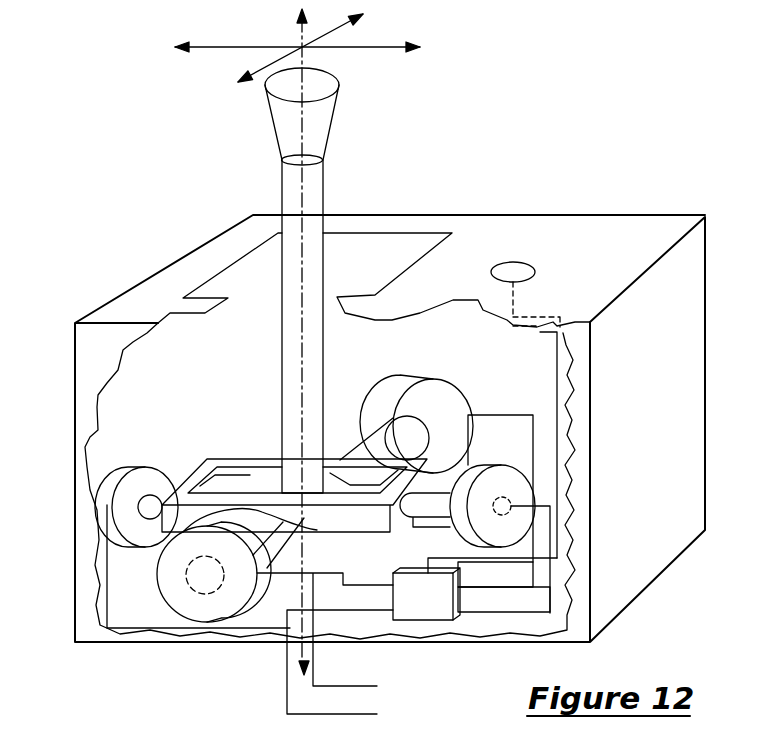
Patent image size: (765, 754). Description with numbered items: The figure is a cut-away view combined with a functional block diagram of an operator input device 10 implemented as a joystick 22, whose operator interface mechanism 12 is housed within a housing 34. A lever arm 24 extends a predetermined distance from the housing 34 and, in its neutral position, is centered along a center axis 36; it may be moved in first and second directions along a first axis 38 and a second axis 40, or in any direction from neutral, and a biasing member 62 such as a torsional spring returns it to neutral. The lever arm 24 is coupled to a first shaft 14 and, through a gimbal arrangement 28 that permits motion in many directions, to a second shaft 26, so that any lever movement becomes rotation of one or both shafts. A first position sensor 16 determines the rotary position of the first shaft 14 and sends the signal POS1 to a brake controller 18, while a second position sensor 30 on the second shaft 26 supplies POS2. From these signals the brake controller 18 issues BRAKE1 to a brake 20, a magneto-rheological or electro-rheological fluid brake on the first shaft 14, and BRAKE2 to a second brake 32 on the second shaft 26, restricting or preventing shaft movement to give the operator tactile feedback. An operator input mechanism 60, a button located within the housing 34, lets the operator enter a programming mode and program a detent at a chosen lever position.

The operator input device 10 is at (539, 205).
The operator interface mechanism 12 is at (108, 445).
The first shaft 14 is at (318, 531).
The first position sensor 16 is at (157, 593).
The brake controller 18 is at (436, 608).
The brake 20 is at (415, 374).
The joystick 22 is at (621, 214).
The lever arm 24 is at (326, 181).
The second shaft 26 is at (448, 522).
The gimbal arrangement 28 is at (262, 435).
The second position sensor 30 is at (133, 466).
The second brake 32 is at (483, 466).
The housing 34 is at (485, 215).
The center axis 36 is at (305, 62).
The first axis 38 is at (388, 47).
The second axis 40 is at (262, 62).
The operator input mechanism 60 is at (520, 272).
The biasing member 62 is at (250, 460).